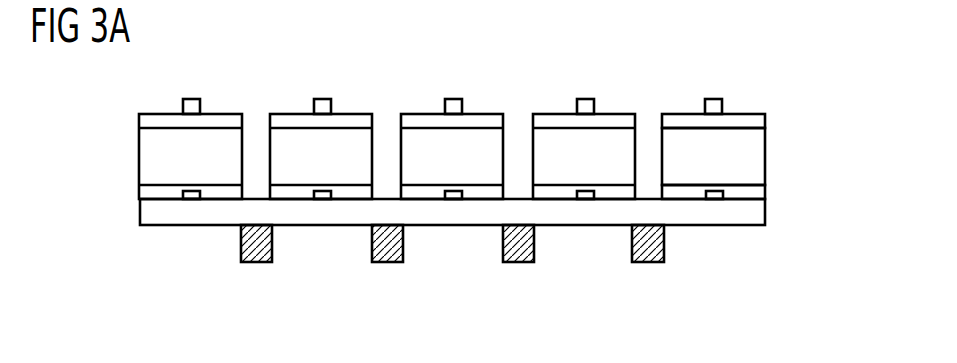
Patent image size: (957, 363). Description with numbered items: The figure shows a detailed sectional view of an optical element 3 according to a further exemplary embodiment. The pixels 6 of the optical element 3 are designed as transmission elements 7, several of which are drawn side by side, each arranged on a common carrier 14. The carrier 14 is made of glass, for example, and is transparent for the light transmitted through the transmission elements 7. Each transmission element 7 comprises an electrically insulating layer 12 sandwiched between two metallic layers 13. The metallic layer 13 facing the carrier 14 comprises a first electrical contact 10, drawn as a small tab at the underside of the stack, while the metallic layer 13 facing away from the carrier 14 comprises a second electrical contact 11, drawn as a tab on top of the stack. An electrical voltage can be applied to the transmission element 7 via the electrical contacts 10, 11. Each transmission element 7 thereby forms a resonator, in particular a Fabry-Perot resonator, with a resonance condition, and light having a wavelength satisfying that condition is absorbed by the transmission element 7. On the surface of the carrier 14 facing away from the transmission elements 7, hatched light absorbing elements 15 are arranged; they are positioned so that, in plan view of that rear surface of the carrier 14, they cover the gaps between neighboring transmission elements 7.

The optical element 3 is at (752, 72).
The pixels 6 is at (847, 115).
The transmission elements 7 is at (748, 171).
The first electrical contact 10 is at (716, 200).
The second electrical contact 11 is at (710, 99).
The electrically insulating layer 12 is at (766, 156).
The metallic layers 13 is at (766, 120).
The carrier 14 is at (148, 212).
The light absorbing elements 15 is at (371, 263).